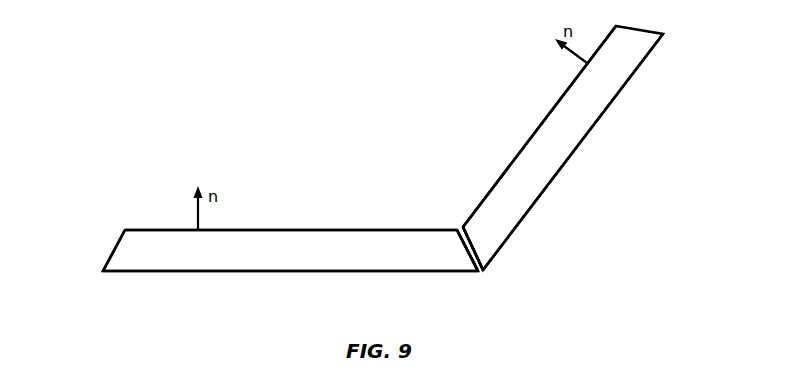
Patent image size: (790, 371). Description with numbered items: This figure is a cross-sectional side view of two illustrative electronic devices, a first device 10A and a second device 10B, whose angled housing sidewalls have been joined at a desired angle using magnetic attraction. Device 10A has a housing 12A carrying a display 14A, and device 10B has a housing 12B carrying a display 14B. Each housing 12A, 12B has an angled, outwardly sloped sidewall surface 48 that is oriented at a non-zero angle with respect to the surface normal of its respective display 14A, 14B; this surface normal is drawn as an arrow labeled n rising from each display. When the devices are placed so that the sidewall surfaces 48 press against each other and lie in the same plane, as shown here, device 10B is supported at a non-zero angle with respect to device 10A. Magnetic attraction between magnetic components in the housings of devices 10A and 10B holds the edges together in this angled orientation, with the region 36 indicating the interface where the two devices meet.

The device 10A is at (267, 223).
The device 10B is at (508, 129).
The housing 12A is at (243, 273).
The housing 12B is at (565, 163).
The display 14A is at (325, 230).
The display 14B is at (500, 178).
The hinge / fold region 36 is at (230, 149).
The sidewall surfaces 48 is at (118, 240).